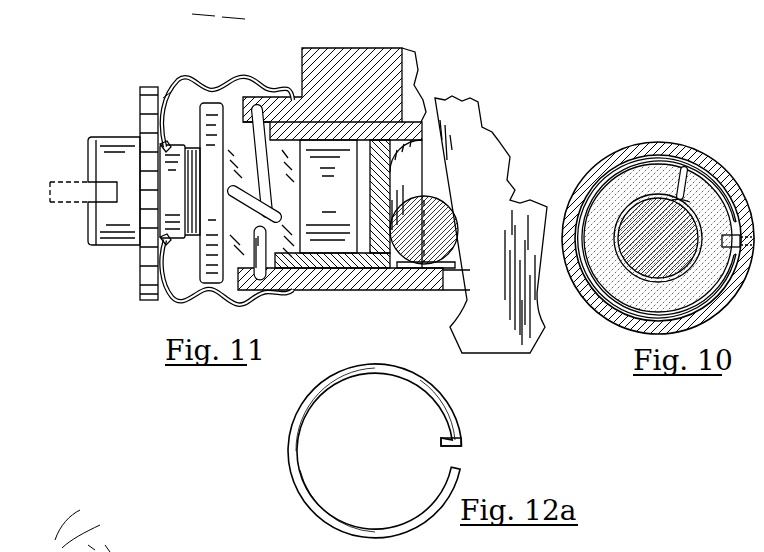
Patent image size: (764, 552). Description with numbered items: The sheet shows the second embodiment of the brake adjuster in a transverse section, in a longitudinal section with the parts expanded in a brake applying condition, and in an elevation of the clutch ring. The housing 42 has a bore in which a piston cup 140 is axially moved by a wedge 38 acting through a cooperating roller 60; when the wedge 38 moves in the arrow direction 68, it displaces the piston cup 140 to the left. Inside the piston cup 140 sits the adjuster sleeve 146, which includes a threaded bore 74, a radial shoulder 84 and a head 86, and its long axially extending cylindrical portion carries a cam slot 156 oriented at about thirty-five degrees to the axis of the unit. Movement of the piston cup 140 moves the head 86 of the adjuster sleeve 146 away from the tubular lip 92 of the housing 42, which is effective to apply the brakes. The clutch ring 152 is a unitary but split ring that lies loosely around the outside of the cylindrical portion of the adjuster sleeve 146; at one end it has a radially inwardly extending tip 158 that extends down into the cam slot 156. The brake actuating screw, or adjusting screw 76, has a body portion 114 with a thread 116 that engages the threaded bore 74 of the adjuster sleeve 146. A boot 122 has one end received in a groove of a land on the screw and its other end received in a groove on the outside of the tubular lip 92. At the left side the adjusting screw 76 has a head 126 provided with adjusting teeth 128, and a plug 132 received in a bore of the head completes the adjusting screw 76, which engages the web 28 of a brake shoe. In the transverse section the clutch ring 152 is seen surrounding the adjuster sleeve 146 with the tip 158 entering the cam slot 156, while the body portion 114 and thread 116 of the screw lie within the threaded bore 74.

In FIG. 11, the web 28 is at (50, 180).
In FIG. 10, the web 28 is at (748, 236).
In FIG. 11, the wedge 38 is at (456, 334).
In FIG. 11, the housing 42 is at (366, 292).
In FIG. 11, the roller 60 is at (440, 195).
In FIG. 11, the arrow direction 68 is at (499, 168).
In FIG. 10, the threaded bore 74 is at (686, 172).
In FIG. 11, the adjusting screw 76 is at (189, 243).
In FIG. 11, the radial shoulder 84 is at (204, 114).
In FIG. 11, the head 86 is at (184, 98).
In FIG. 10, the tubular lip 92 is at (656, 142).
In FIG. 10, the body portion 114 is at (671, 243).
In FIG. 10, the thread 116 is at (688, 200).
In FIG. 11, the boot 122 is at (272, 291).
In FIG. 11, the head 126 is at (142, 128).
In FIG. 11, the adjusting teeth 128 is at (148, 118).
In FIG. 11, the plug 132 is at (94, 138).
In FIG. 11, the piston cup 140 is at (413, 113).
In FIG. 11, the adjuster sleeve 146 is at (341, 196).
In FIG. 10, the adjuster sleeve 146 is at (616, 186).
In FIG. 11, the clutch ring 152 is at (250, 143).
In FIG. 10, the clutch ring 152 is at (621, 162).
In FIG. 12A, the clutch ring 152 is at (288, 433).
In FIG. 11, the cam slot 156 is at (207, 308).
In FIG. 12A, the radially inwardly extending tip 158 is at (443, 442).